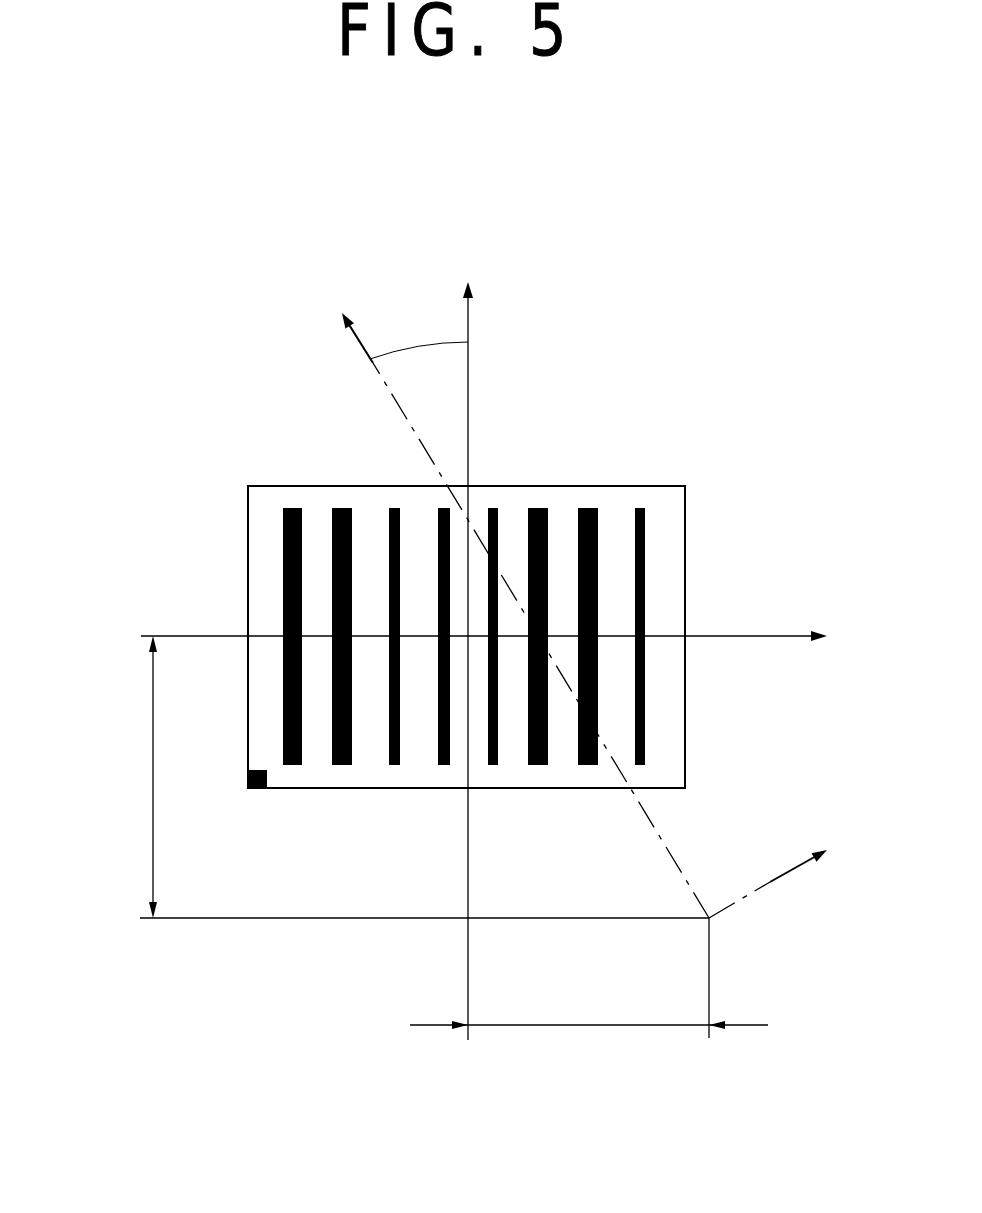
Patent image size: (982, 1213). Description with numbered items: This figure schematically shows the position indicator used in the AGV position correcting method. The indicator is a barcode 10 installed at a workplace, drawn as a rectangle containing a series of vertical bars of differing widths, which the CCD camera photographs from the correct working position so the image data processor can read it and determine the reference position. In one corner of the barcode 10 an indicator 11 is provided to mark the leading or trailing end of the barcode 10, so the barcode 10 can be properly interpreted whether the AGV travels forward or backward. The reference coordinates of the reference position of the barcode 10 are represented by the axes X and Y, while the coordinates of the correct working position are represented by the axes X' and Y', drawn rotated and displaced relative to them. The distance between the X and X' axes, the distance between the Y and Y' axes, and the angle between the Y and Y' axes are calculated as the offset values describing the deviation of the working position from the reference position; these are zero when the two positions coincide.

The barcode 10 is at (134, 464).
The indicator 11 is at (255, 788).
The X axis X is at (499, 638).
The Y axis Y is at (467, 642).
The X' axis X' is at (787, 872).
The Y' axis Y' is at (519, 600).